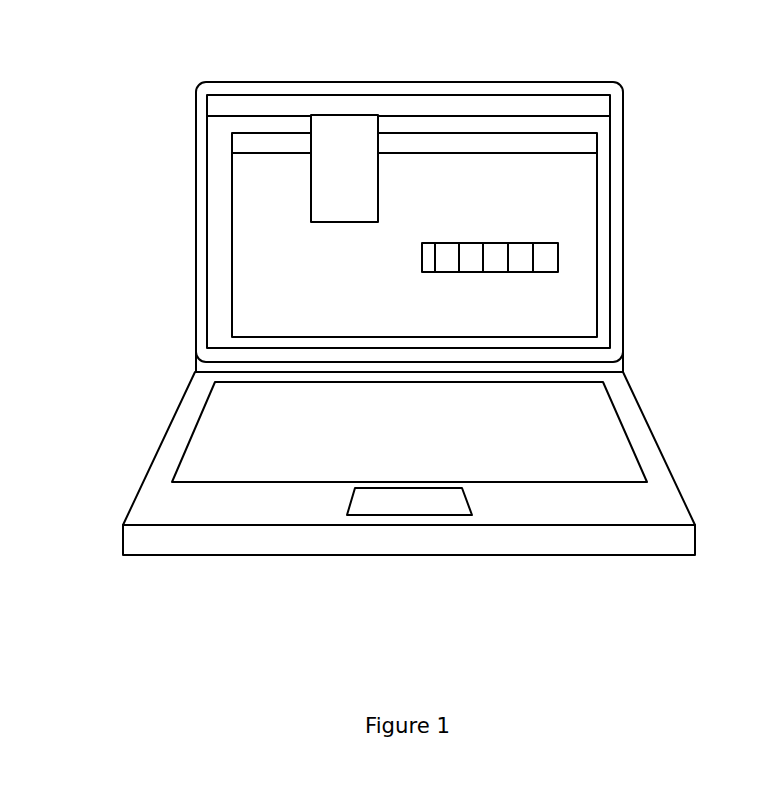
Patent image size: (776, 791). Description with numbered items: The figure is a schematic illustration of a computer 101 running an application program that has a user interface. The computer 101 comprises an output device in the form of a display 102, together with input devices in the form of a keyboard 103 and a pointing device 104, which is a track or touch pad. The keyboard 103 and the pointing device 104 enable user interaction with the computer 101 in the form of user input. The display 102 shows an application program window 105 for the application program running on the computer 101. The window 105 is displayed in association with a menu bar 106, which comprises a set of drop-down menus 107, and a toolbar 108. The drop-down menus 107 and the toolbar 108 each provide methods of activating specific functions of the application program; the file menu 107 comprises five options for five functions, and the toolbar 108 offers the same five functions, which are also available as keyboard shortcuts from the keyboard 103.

The computer 101 is at (163, 438).
The display 102 is at (207, 207).
The keyboard 103 is at (625, 412).
The pointing device 104 is at (402, 517).
The application program window 105 is at (597, 162).
The menu bar 106 is at (425, 95).
The drop-down menus 107 is at (311, 167).
The toolbar 108 is at (558, 253).